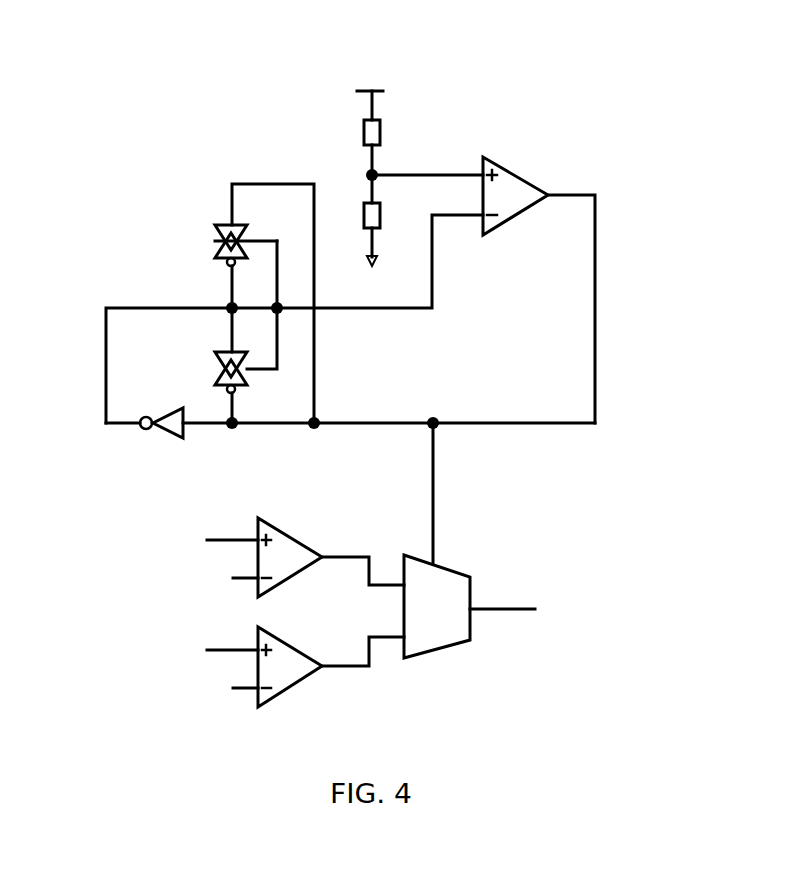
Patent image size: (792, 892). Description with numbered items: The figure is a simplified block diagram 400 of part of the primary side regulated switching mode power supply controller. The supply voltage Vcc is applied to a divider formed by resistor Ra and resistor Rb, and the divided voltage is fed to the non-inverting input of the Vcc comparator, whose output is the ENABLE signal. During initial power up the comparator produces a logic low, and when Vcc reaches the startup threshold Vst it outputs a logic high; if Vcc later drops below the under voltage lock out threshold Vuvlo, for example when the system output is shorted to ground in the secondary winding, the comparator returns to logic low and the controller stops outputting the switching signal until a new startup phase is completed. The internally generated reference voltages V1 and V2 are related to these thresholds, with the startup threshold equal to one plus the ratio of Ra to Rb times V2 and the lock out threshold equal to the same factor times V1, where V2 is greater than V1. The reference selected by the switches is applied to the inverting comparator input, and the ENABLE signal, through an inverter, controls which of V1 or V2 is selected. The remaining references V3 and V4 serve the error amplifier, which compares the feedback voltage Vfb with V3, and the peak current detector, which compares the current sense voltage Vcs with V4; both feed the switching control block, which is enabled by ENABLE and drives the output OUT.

The block diagram of part of the SMPS controller 400 is at (428, 404).
The Vcc voltage Vcc is at (367, 92).
The resistor Ra is at (357, 132).
The resistor Rb is at (357, 217).
The reference voltage V1 is at (215, 241).
The reference voltage V2 is at (215, 369).
The reference voltage V3 is at (232, 579).
The reference voltage V4 is at (232, 689).
The feedback voltage input Vfb is at (210, 541).
The current sense voltage input Vcs is at (210, 651).
The ENABLE signal ENABLE is at (350, 414).
The switching control output OUT is at (506, 598).